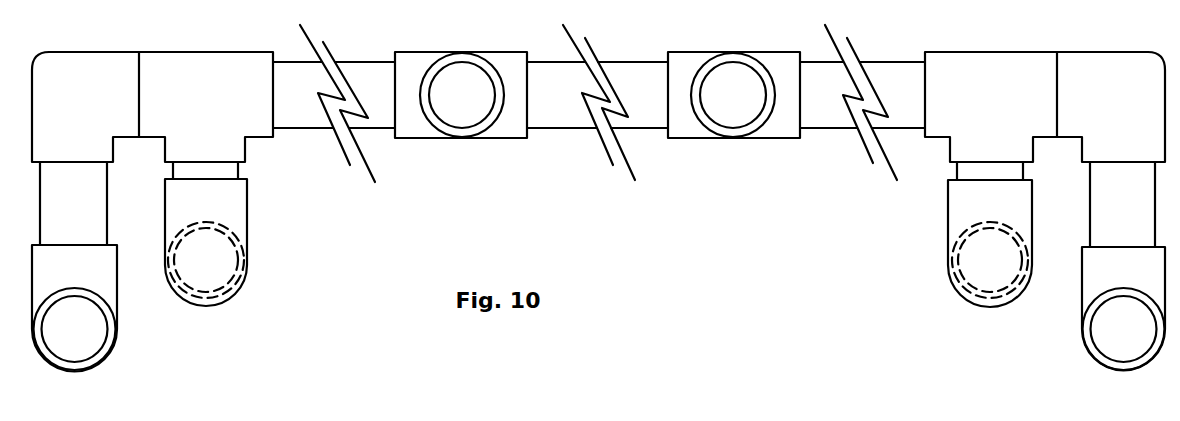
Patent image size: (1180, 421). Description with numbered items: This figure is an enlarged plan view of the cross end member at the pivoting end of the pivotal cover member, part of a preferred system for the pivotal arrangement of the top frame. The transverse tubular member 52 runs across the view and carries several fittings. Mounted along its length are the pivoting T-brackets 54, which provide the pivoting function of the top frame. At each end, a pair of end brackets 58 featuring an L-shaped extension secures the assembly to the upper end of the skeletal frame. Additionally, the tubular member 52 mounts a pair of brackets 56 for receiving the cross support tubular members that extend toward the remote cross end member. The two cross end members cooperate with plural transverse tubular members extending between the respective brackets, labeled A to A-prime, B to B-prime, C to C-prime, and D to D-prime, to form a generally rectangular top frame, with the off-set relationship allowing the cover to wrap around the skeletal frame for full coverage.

The transverse tubular member 52 is at (555, 128).
The pivoting T-brackets 54 is at (497, 138).
The brackets 56 is at (247, 150).
The end brackets 58 is at (118, 148).